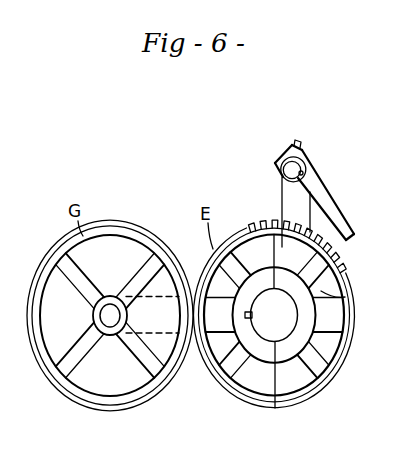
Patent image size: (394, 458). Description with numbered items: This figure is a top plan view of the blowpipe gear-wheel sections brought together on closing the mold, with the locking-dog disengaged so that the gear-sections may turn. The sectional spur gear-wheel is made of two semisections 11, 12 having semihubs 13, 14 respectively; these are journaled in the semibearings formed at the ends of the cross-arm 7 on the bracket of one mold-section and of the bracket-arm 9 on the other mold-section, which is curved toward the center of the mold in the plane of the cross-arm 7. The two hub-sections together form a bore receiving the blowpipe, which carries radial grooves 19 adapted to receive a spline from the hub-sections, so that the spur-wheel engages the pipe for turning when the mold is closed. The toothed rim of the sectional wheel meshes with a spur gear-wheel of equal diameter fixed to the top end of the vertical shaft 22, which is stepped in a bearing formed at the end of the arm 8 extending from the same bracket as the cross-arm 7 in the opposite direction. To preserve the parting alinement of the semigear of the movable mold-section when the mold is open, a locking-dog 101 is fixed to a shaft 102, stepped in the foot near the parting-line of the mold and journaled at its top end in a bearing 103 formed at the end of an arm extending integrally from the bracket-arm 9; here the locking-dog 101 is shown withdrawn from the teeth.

The cross-arm 7 is at (215, 326).
The arm 8 is at (158, 303).
The bracket-arm 9 is at (337, 316).
The semisection 11 is at (233, 386).
The semisection 12 is at (305, 394).
The semihub 13 is at (263, 273).
The semihub 14 is at (288, 355).
The radial grooves 19 is at (252, 315).
The vertical shaft 22 is at (109, 316).
The locking-dog 101 is at (323, 202).
The shaft 102 is at (306, 163).
The bearing 103 is at (280, 180).